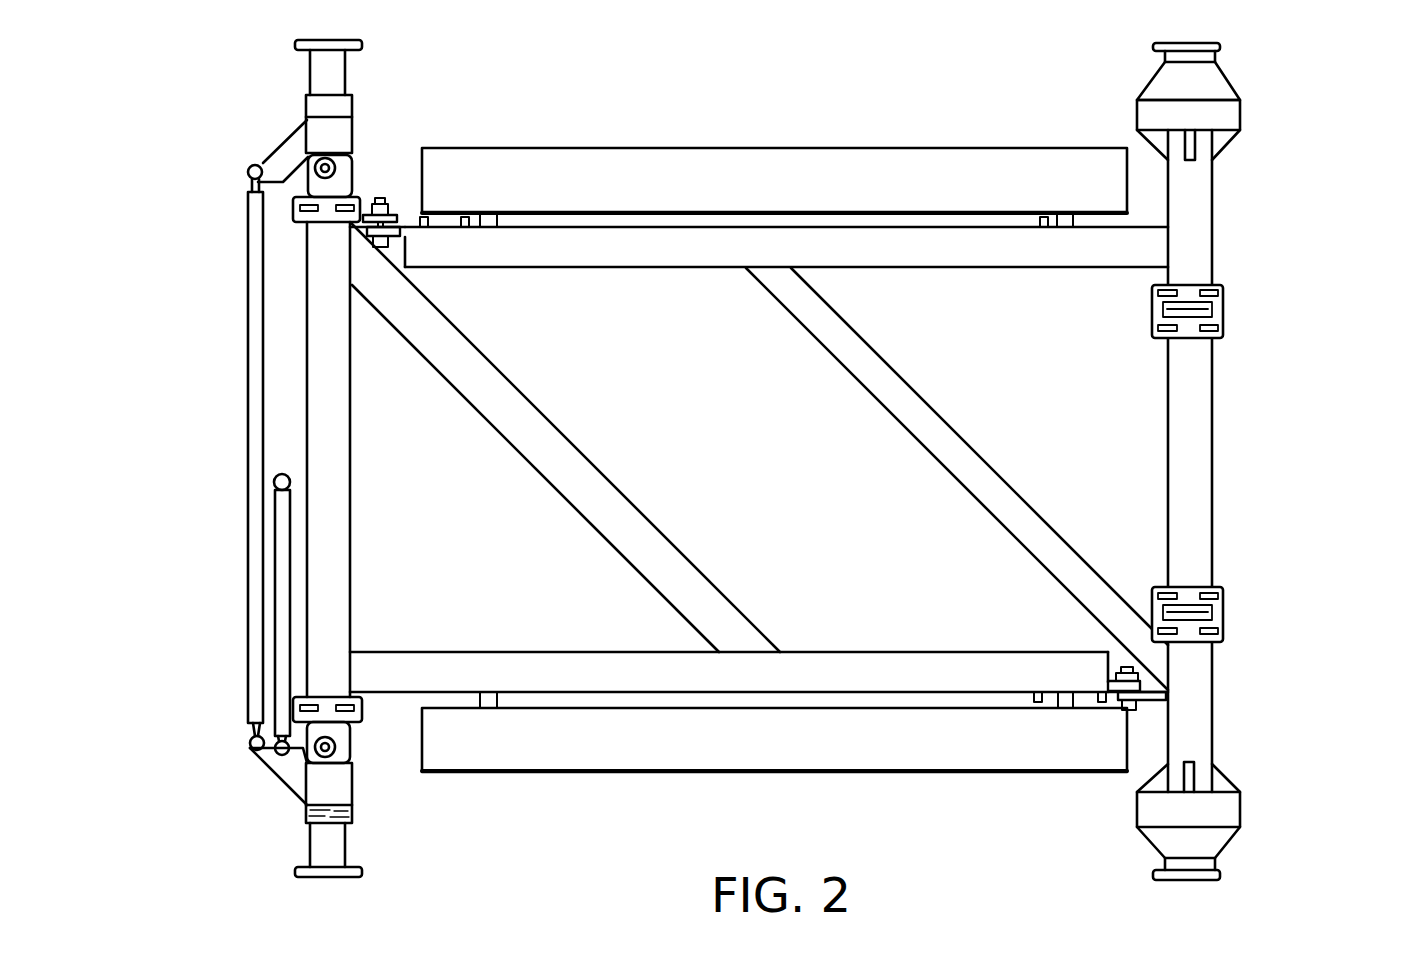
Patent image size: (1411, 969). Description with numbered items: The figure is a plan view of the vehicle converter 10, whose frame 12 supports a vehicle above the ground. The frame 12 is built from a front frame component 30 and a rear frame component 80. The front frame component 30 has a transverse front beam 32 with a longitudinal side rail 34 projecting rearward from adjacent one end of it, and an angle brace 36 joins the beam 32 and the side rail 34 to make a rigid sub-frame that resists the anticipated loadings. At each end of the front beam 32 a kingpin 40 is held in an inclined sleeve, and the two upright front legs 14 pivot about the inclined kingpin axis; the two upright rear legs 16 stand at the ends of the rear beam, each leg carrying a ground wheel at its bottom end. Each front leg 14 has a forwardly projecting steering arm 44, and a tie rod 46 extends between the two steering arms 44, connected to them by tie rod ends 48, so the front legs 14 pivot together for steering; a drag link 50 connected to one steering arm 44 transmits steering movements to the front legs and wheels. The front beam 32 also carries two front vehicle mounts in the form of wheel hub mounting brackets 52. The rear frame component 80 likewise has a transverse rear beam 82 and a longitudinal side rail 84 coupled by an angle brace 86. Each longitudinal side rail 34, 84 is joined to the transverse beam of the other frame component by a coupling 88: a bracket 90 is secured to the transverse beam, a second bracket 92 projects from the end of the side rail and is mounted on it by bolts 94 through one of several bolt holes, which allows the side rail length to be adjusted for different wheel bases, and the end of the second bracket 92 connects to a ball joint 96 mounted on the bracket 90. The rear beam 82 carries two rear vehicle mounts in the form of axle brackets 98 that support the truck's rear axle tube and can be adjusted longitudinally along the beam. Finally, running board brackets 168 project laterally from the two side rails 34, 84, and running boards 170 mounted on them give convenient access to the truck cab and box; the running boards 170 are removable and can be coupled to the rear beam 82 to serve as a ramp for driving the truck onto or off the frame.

The vehicle converter 10 is at (1300, 205).
The frame 12 is at (773, 451).
The front legs 14 is at (340, 108).
The rear legs 16 is at (1226, 116).
The front frame component 30 is at (707, 459).
The transverse front beam 32 is at (335, 425).
The longitudinal side rail 34 is at (808, 650).
The angle brace 36 is at (598, 494).
The kingpin 40 is at (330, 164).
The steering arm 44 is at (285, 152).
The tie rod 46 is at (250, 425).
The tie rod ends 48 is at (250, 745).
The drag link 50 is at (278, 537).
The wheel hub mounting brackets 52 is at (291, 210).
The rear frame component 80 is at (873, 461).
The transverse rear beam 82 is at (1168, 418).
The longitudinal side rail 84 is at (690, 268).
The angle brace 86 is at (932, 430).
The coupling 88 is at (387, 178).
The bracket 90 is at (396, 214).
The second bracket 92 is at (394, 238).
The bolts 94 is at (428, 228).
The ball joint 96 is at (350, 228).
The axle brackets 98 is at (1228, 308).
The running board brackets 168 is at (492, 211).
The running boards 170 is at (684, 148).